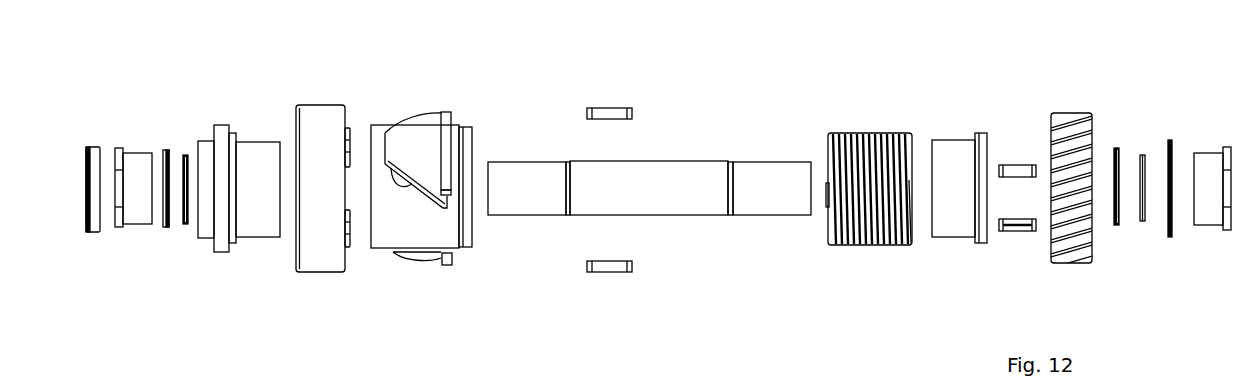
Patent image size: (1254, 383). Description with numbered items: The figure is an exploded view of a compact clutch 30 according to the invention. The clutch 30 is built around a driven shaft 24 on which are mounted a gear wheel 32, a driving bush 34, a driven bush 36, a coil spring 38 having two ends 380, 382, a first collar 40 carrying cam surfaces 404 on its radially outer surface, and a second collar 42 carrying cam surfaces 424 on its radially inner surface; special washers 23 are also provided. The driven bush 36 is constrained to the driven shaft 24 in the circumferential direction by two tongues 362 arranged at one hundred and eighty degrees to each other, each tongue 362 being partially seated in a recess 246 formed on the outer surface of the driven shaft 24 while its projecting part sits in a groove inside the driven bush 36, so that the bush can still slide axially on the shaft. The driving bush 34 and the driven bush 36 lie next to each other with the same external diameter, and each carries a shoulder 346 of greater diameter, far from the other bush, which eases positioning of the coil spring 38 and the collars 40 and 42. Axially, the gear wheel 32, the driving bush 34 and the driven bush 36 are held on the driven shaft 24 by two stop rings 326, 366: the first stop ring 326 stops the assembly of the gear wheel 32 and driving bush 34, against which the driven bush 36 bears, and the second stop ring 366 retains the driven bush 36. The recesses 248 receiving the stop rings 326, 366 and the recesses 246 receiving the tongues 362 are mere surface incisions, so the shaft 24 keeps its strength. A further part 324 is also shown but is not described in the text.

The clutch 30 is at (204, 82).
The special washers 23 is at (164, 226).
The second stop ring 366 is at (186, 224).
The driven bush 36 is at (250, 236).
The shoulder 346 is at (235, 128).
The second collar 42 is at (328, 194).
The cam surfaces 424 is at (350, 162).
The cam surfaces 404 is at (415, 180).
The first collar 40 is at (421, 201).
The driven shaft 24 is at (649, 178).
The recess 246 is at (590, 215).
The recesses 248 is at (566, 160).
The tongue 362 is at (607, 109).
The coil spring 38 is at (846, 182).
The spring end 382 is at (828, 185).
The spring end 380 is at (913, 195).
The driving bush 34 is at (953, 148).
The pin 324 is at (1009, 229).
The gear wheel 32 is at (1073, 125).
The first stop ring 326 is at (1143, 155).